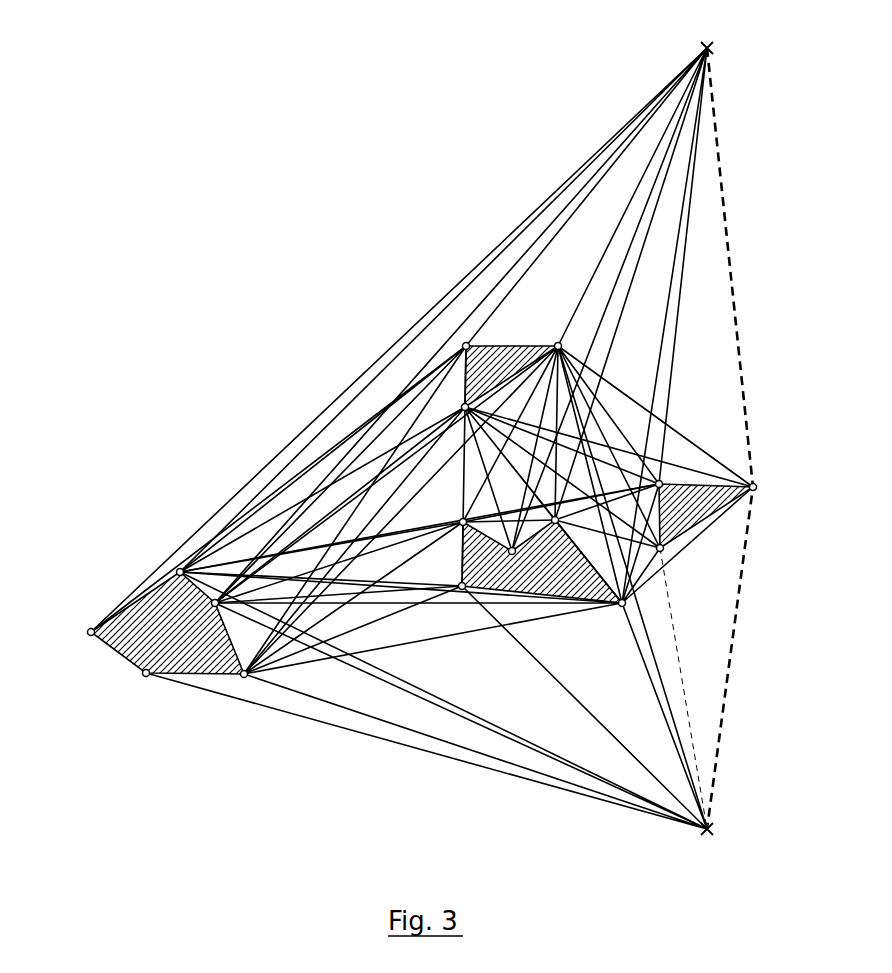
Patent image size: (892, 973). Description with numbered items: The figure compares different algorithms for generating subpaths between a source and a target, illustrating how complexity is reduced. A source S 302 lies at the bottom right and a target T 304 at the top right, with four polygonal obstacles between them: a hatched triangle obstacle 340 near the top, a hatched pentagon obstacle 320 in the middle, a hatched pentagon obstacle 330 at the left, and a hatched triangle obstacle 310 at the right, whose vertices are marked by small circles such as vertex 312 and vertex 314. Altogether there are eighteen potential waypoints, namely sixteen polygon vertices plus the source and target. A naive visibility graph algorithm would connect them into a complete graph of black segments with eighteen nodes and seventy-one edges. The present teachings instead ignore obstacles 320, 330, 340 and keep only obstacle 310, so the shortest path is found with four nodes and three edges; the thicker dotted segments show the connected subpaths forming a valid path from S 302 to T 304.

The source S 302 is at (714, 845).
The target T 304 is at (715, 40).
The obstacle 310 is at (697, 508).
The obstacle vertex node 312 is at (781, 490).
The obstacle vertex node 314 is at (685, 561).
The obstacle 320 is at (573, 608).
The obstacle 330 is at (130, 668).
The obstacle 340 is at (467, 374).